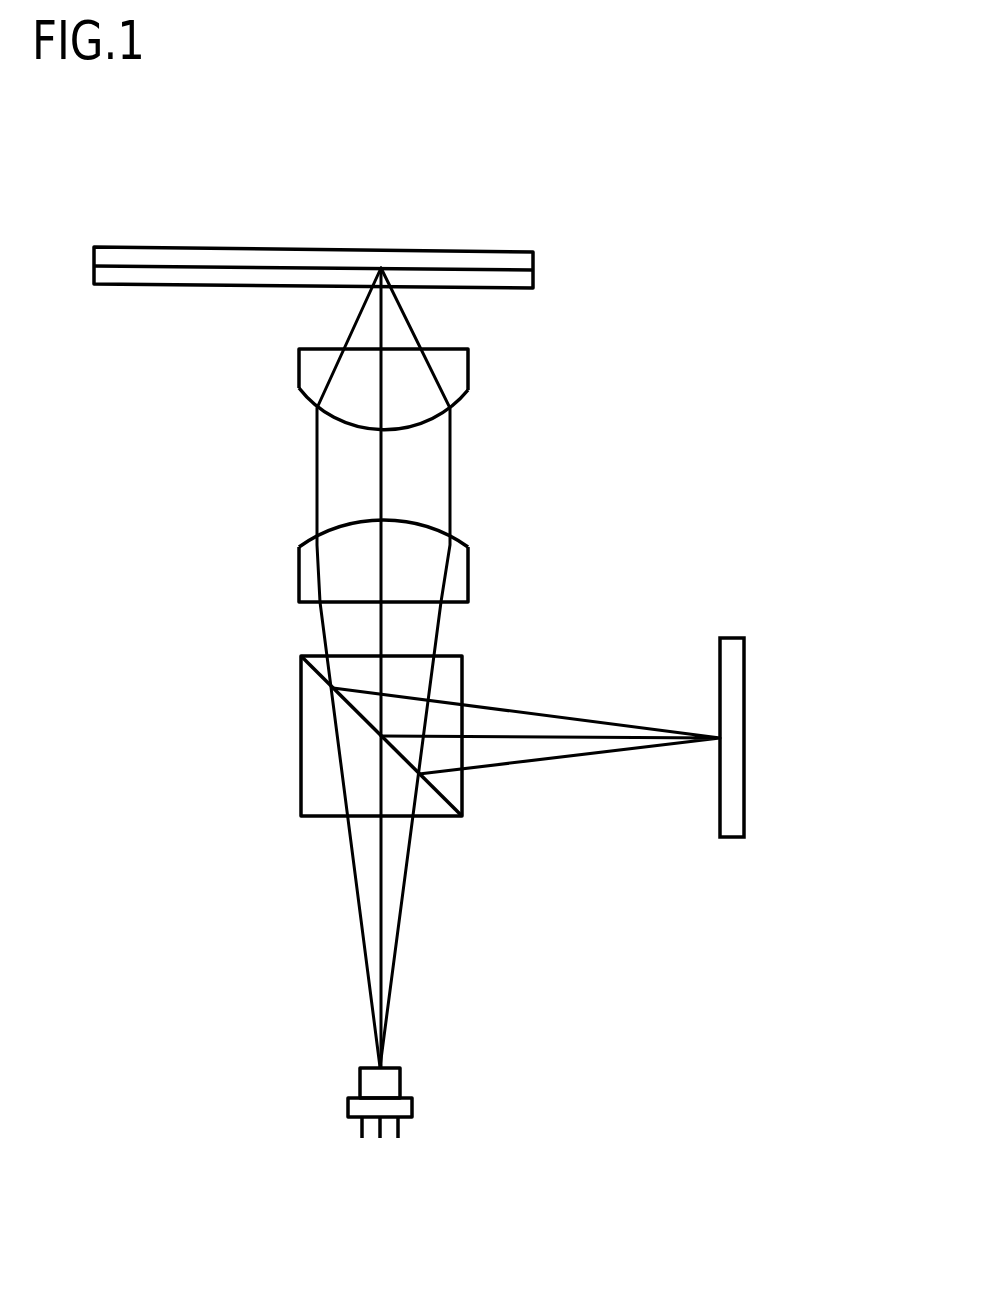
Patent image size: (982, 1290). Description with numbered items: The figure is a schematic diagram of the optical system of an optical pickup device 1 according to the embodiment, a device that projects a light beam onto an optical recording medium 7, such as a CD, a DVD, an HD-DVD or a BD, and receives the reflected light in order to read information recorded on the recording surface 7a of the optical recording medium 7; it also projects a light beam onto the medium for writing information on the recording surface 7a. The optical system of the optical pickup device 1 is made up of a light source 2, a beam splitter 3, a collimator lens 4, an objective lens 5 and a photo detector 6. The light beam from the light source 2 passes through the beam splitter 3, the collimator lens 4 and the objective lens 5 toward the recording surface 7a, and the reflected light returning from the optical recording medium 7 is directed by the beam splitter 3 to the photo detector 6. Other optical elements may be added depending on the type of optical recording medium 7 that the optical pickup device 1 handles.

The optical pickup device 1 is at (832, 265).
The light source 2 is at (348, 1105).
The beam splitter 3 is at (301, 752).
The collimator lens 4 is at (300, 574).
The objective lens 5 is at (300, 388).
The photo detector 6 is at (744, 733).
The optical recording medium 7 is at (533, 280).
The recording surface 7a is at (152, 266).